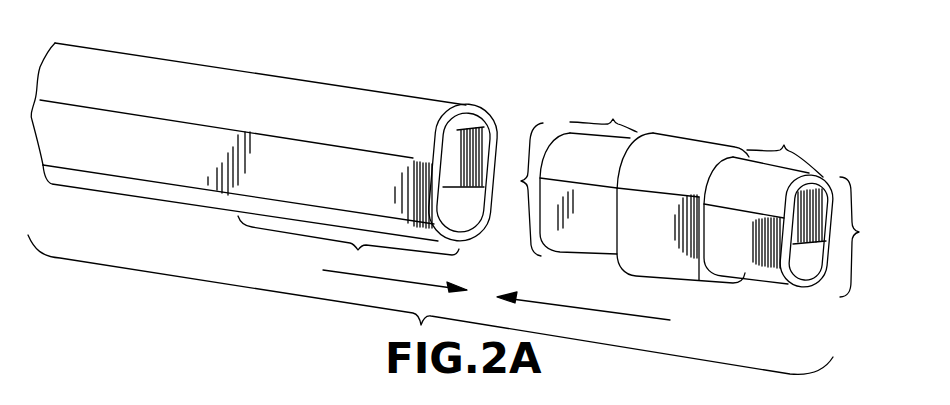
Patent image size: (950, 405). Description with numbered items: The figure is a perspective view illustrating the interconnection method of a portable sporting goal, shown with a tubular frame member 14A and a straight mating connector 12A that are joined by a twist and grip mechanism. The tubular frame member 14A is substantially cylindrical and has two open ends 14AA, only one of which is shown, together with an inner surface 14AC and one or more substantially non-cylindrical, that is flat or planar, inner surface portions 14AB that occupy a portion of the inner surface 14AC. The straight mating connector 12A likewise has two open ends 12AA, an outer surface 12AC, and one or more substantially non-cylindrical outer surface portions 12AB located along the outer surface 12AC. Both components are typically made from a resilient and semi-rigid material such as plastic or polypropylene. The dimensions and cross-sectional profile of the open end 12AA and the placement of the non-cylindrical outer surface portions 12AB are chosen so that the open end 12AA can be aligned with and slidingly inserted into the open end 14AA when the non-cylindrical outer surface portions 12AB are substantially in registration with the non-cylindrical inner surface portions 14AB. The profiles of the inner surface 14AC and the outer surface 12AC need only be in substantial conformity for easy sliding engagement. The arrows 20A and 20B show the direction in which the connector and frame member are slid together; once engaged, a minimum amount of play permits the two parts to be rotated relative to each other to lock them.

The tubular frame member 14A is at (205, 65).
The open end 14AA is at (348, 248).
The non-cylindrical inner surface portion 14AB is at (440, 195).
The inner surface 14AC is at (460, 140).
The straight mating connector 12A is at (670, 148).
The open end 12AA is at (701, 210).
The non-cylindrical outer surface portion 12AB is at (830, 208).
The outer surface 12AC is at (698, 134).
The arrow 20A is at (600, 307).
The arrow 20B is at (323, 270).